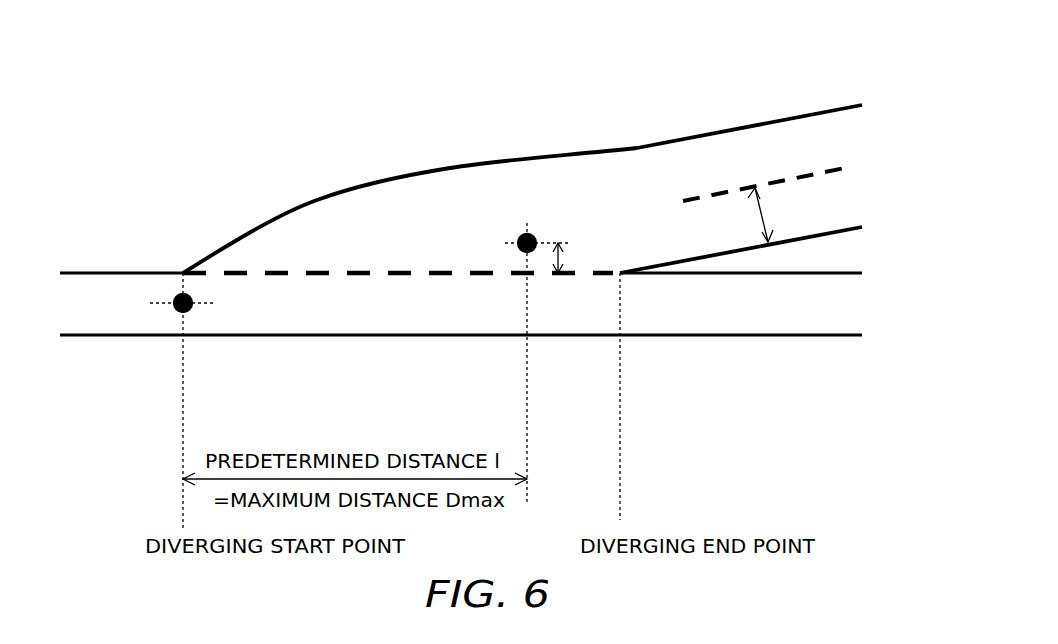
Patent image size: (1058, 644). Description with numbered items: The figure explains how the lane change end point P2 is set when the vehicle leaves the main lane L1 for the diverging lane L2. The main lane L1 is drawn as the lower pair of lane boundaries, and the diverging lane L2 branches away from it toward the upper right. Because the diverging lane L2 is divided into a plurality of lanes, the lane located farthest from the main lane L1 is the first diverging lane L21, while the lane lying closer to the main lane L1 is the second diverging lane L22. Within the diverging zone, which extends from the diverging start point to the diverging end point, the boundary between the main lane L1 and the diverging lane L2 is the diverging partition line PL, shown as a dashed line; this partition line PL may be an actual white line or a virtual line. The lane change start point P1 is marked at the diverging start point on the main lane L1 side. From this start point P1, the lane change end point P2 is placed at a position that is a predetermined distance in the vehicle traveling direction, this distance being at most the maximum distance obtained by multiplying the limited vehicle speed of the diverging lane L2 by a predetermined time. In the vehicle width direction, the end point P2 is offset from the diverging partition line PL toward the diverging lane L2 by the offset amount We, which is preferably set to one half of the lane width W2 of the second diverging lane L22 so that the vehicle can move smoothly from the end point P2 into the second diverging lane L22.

The main lane L1 is at (87, 343).
The diverging lane L2 is at (510, 150).
The first diverging lane L21 is at (827, 138).
The second diverging lane L22 is at (842, 218).
The diverging partition line PL is at (336, 273).
The lane change start point P1 is at (192, 310).
The lane change end point P2 is at (532, 250).
The offset amount We is at (583, 255).
The lane width W2 is at (781, 215).